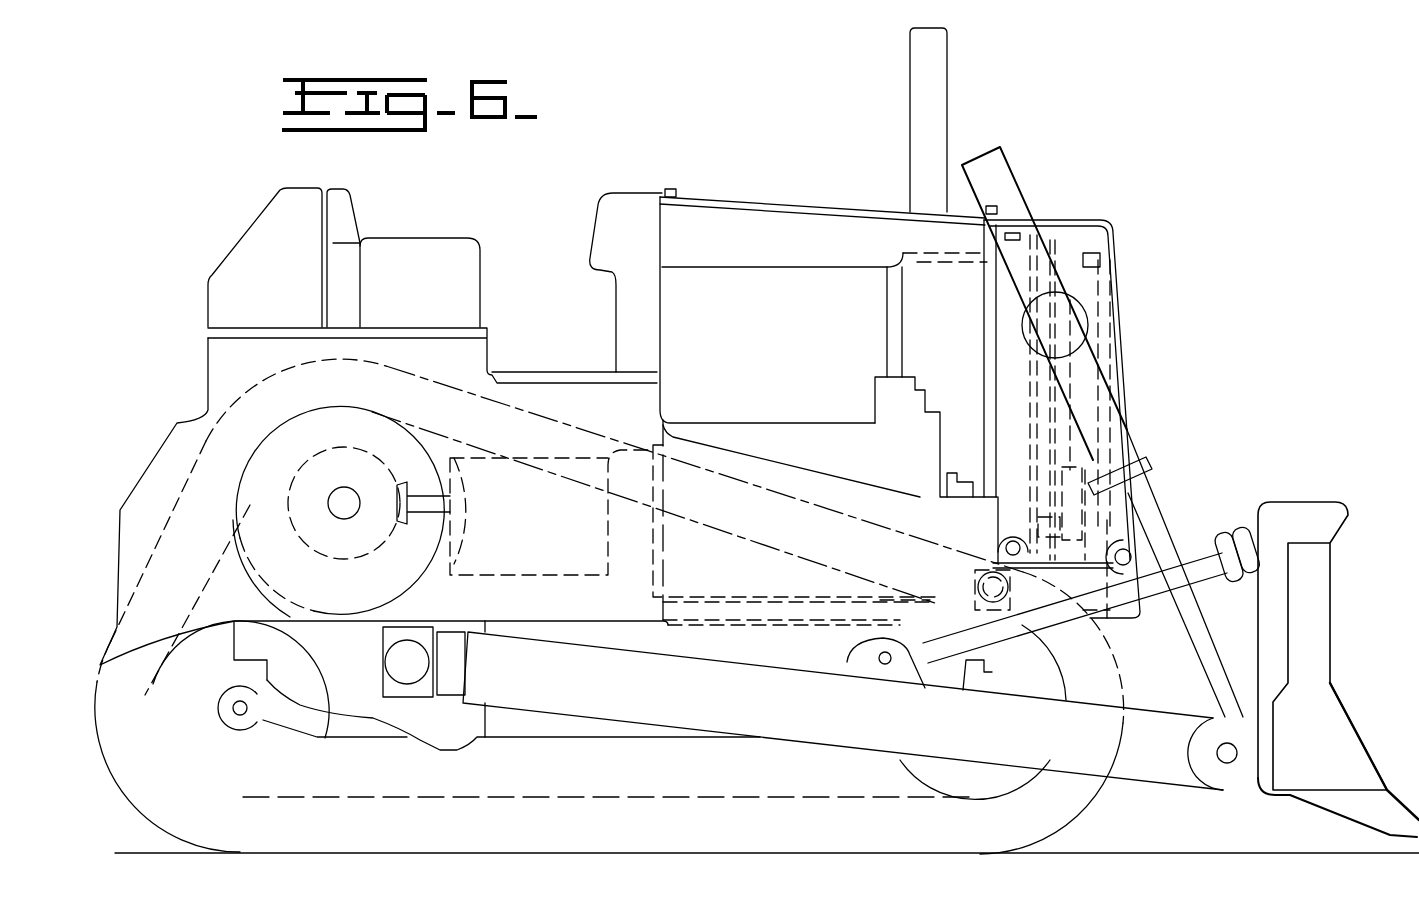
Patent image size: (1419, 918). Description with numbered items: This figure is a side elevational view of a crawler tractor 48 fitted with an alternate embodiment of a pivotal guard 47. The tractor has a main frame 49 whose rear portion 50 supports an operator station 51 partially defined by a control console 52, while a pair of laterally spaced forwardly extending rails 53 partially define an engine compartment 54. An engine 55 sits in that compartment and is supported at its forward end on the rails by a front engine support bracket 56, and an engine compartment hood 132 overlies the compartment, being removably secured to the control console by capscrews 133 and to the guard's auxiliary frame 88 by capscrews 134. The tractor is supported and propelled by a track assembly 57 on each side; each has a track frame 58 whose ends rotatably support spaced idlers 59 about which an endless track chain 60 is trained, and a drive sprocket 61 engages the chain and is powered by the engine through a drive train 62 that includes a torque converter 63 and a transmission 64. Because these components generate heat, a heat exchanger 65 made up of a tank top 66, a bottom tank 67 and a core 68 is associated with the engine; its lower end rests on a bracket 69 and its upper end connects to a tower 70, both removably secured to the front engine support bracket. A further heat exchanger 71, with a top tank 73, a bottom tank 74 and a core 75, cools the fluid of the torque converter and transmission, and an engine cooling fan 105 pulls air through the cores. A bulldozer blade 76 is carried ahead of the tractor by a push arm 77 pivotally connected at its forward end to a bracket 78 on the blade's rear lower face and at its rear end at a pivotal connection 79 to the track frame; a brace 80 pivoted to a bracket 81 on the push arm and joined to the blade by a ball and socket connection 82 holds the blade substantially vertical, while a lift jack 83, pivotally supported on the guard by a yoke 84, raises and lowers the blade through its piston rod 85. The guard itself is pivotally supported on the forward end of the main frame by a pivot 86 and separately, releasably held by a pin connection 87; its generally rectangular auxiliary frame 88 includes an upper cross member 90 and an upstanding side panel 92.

The pivotal guard 47 is at (1106, 205).
The tractor 48 is at (758, 168).
The main frame 49 is at (667, 417).
The rear portion 50 is at (210, 358).
The operator station 51 is at (497, 220).
The control console 52 is at (595, 238).
The rails 53 is at (845, 488).
The engine compartment 54 is at (748, 285).
The engine 55 is at (790, 432).
The front engine support bracket 56 is at (975, 578).
The track assembly 57 is at (1062, 832).
The track frame 58 is at (505, 738).
The idlers 59 is at (300, 745).
The endless track chain 60 is at (485, 855).
The drive sprocket 61 is at (437, 530).
The drive train 62 is at (548, 458).
The torque converter 63 is at (650, 590).
The transmission 64 is at (504, 575).
The heat exchanger 65 is at (998, 365).
The tank top 66 is at (1020, 235).
The bottom tank 67 is at (1050, 572).
The core 68 is at (1030, 488).
The bracket 69 is at (1050, 623).
The tower 70 is at (984, 300).
The heat exchanger 71 is at (1100, 284).
The top tank 73 is at (1112, 246).
The bottom tank 74 is at (1130, 530).
The core 75 is at (1105, 375).
The bulldozer blade 76 is at (1320, 592).
The push arm 77 is at (1138, 772).
The bracket 78 is at (1233, 790).
The pivotal connection 79 is at (400, 660).
The brace 80 is at (990, 630).
The bracket 81 is at (873, 672).
The ball and socket connection 82 is at (1230, 528).
The lift jack 83 is at (1127, 462).
The yoke 84 is at (1086, 325).
The piston rod 85 is at (1195, 633).
The pivot 86 is at (1136, 555).
The pin connection 87 is at (1003, 548).
The auxiliary frame 88 is at (1127, 401).
The upper cross member 90 is at (1070, 218).
The side panel 92 is at (1100, 345).
The engine cooling fan 105 is at (1045, 523).
The engine compartment hood 132 is at (812, 212).
The capscrews 133 is at (692, 168).
The capscrews 134 is at (1008, 196).